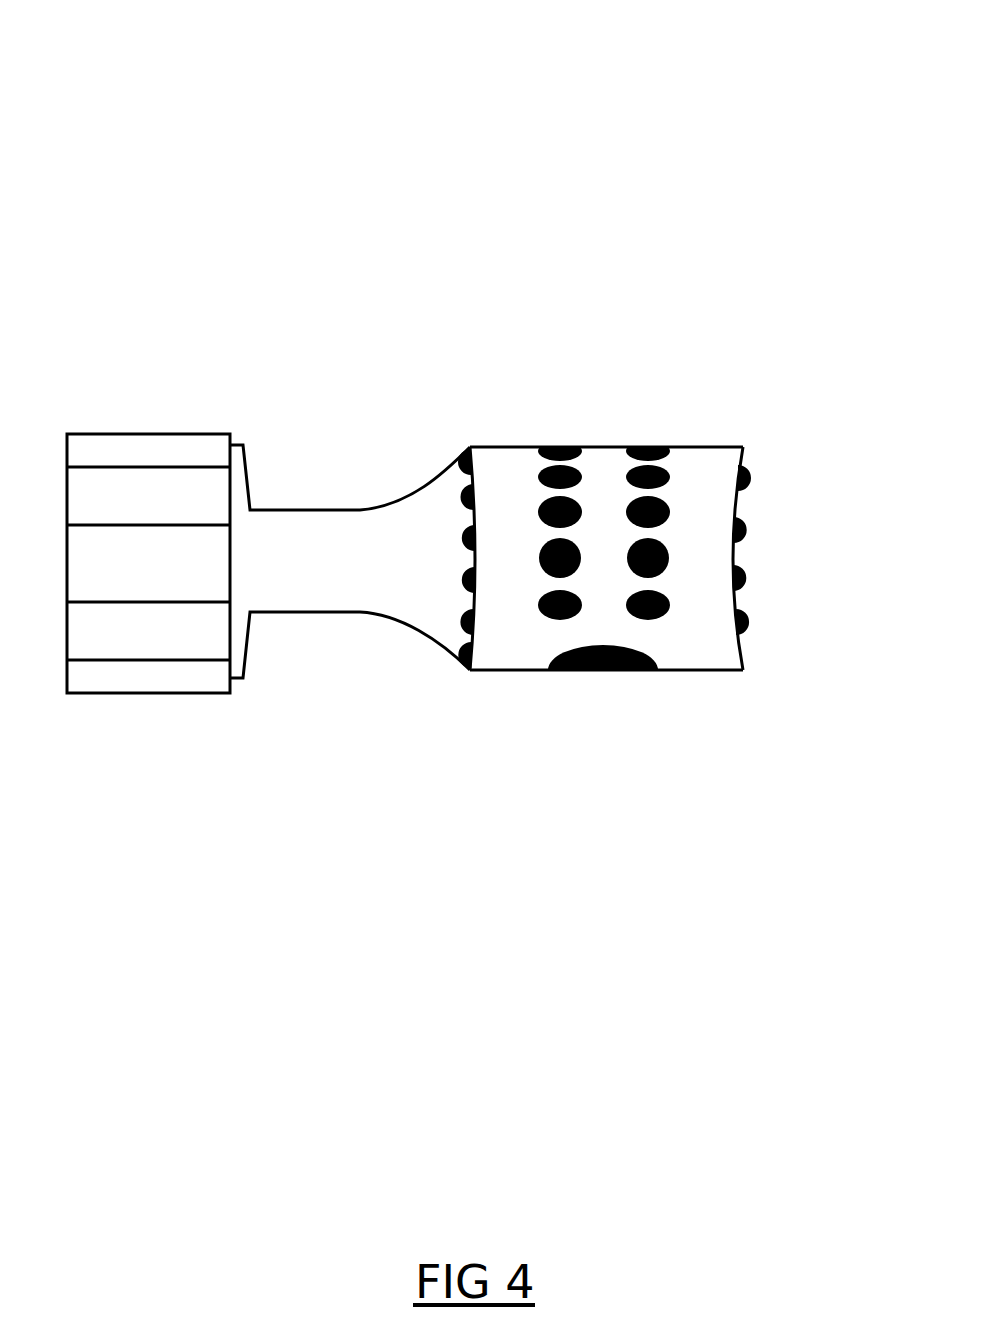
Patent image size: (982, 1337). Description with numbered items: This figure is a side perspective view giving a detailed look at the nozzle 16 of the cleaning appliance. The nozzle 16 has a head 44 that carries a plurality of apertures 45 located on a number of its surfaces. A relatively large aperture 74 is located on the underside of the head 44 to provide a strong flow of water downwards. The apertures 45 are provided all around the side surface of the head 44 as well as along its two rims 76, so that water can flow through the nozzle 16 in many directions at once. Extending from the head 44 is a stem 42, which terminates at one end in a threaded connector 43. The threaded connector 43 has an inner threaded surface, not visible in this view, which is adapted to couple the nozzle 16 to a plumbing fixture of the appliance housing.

The nozzle 16 is at (625, 197).
The stem 42 is at (372, 583).
The threaded connector 43 is at (115, 495).
The head 44 is at (704, 690).
The apertures 45 is at (459, 655).
The large aperture 74 is at (603, 672).
The rims 76 is at (745, 458).